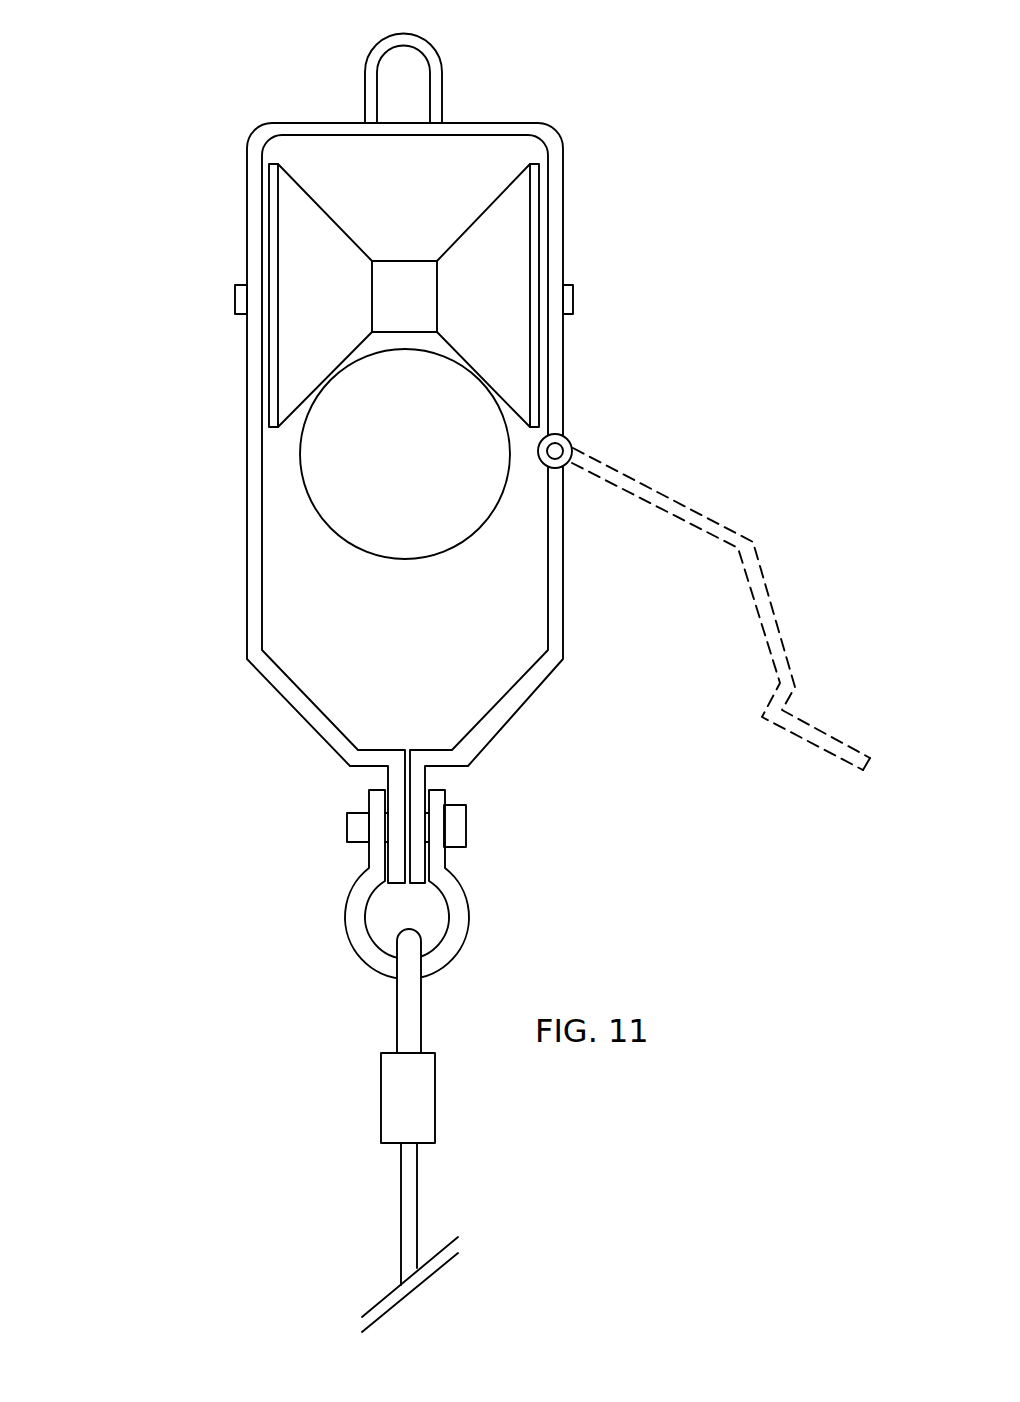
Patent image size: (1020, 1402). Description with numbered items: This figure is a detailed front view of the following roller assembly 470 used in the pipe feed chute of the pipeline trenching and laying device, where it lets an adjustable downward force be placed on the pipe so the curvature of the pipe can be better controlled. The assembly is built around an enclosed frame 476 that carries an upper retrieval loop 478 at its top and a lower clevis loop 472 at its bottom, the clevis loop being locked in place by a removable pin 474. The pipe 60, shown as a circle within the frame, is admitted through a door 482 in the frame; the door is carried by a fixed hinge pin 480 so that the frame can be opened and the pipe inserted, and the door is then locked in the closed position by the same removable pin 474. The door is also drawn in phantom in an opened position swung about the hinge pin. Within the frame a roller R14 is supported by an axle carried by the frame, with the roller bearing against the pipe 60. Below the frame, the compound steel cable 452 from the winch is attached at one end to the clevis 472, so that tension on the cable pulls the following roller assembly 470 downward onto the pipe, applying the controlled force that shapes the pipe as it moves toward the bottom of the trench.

The following roller assembly 470 is at (307, 503).
The upper retrieval loop 478 is at (358, 45).
The roller R14 is at (503, 258).
The pipe 60 is at (342, 478).
The enclosed frame 476 is at (217, 553).
The fixed hinge pin 480 is at (577, 428).
The door 482 is at (714, 637).
The removable pin 474 is at (343, 828).
The lower clevis loop 472 is at (332, 927).
The compound steel cable 452 is at (423, 1210).